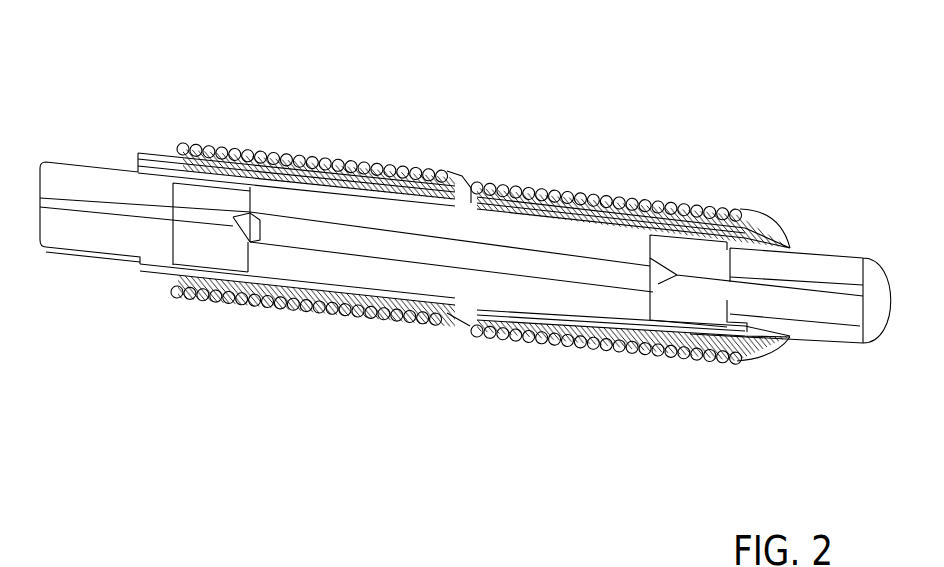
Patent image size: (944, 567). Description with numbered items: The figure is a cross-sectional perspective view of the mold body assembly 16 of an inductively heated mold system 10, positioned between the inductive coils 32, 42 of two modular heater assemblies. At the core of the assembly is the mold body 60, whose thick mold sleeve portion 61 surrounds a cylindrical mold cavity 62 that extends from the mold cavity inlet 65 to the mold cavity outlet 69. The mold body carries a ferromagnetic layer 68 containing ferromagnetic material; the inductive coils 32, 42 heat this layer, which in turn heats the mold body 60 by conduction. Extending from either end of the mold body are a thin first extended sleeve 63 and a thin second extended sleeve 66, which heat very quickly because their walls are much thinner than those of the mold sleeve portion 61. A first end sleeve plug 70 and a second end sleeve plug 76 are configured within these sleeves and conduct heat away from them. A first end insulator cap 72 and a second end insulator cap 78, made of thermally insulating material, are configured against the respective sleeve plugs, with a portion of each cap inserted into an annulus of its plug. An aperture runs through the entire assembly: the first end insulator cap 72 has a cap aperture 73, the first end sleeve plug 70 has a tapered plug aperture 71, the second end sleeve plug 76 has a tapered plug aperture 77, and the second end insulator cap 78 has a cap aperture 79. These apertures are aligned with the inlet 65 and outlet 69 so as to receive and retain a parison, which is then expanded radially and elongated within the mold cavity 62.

The inductively heated mold system 10 is at (310, 105).
The mold body assembly 16 is at (428, 210).
The inductive coil 32 is at (391, 173).
The inductive coil 42 is at (550, 190).
The mold body 60 is at (330, 210).
The mold sleeve portion 61 is at (393, 273).
The mold cavity 62 is at (457, 252).
The first extended sleeve 63 is at (148, 190).
The mold cavity inlet 65 is at (252, 228).
The second extended sleeve 66 is at (700, 236).
The ferromagnetic layer 68 is at (469, 203).
The mold cavity outlet 69 is at (663, 278).
The first end sleeve plug 70 is at (182, 235).
The plug aperture 71 is at (226, 218).
The first end insulator cap 72 is at (62, 230).
The cap aperture 73 is at (73, 210).
The second end sleeve plug 76 is at (717, 312).
The plug aperture 77 is at (693, 284).
The second end insulator cap 78 is at (813, 320).
The cap aperture 79 is at (793, 295).